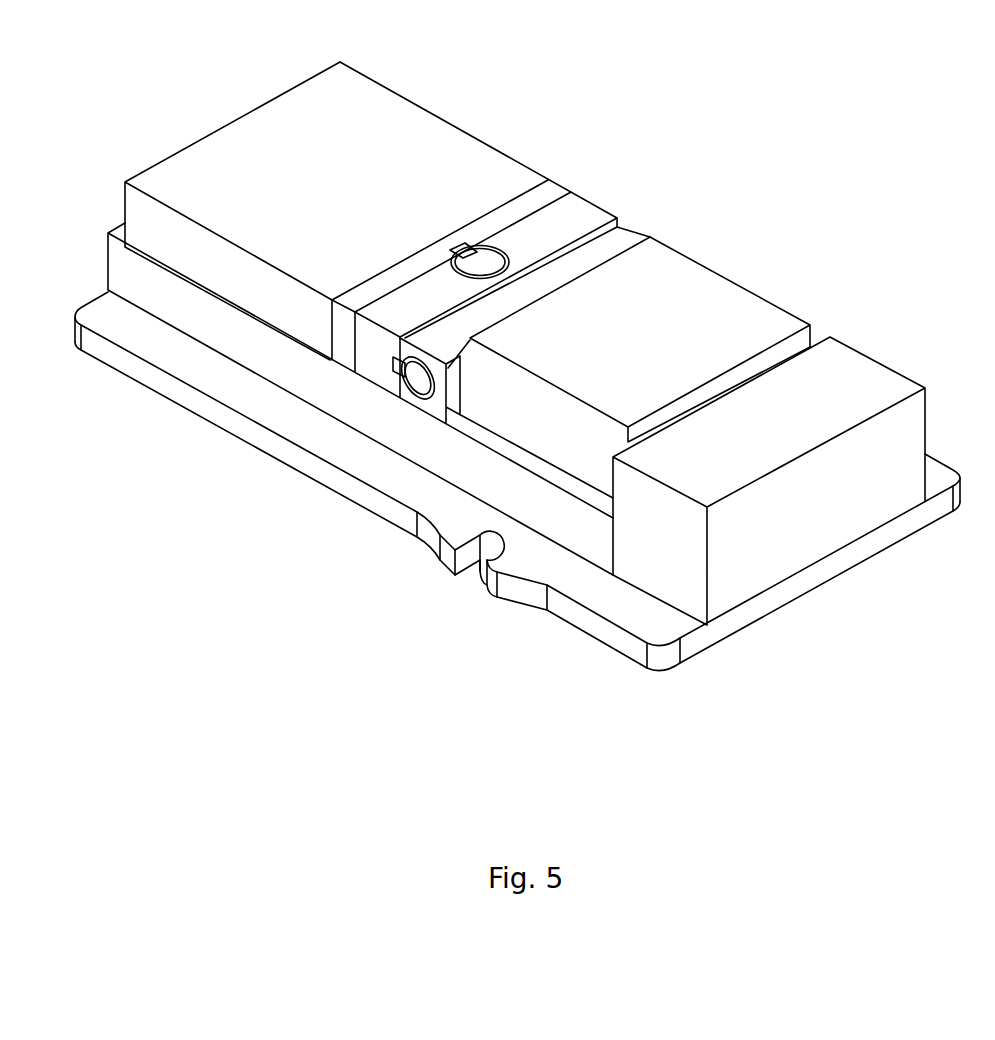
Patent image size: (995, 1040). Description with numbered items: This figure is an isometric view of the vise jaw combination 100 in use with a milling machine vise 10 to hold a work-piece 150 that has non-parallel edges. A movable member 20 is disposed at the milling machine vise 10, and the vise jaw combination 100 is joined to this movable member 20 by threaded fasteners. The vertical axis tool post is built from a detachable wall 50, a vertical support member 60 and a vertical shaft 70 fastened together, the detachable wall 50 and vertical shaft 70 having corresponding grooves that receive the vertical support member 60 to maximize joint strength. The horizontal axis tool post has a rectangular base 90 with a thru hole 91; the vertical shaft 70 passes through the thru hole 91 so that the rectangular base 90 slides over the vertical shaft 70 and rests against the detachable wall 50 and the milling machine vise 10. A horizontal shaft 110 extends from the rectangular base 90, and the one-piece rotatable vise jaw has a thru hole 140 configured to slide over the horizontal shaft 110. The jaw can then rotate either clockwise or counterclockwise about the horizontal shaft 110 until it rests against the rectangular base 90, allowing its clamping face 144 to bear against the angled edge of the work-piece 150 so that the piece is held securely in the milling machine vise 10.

The milling machine vise 10 is at (727, 575).
The movable member 20 is at (142, 210).
The detachable wall 50 is at (550, 192).
The vertical support member 60 is at (467, 250).
The vertical shaft 70 is at (483, 263).
The rectangular base 90 is at (580, 213).
The thru hole 91 is at (510, 260).
The vise jaw combination 100 is at (397, 362).
The horizontal shaft 110 is at (417, 380).
The thru hole 140 is at (452, 397).
The clamping face 144 is at (428, 383).
The work-piece 150 is at (752, 310).